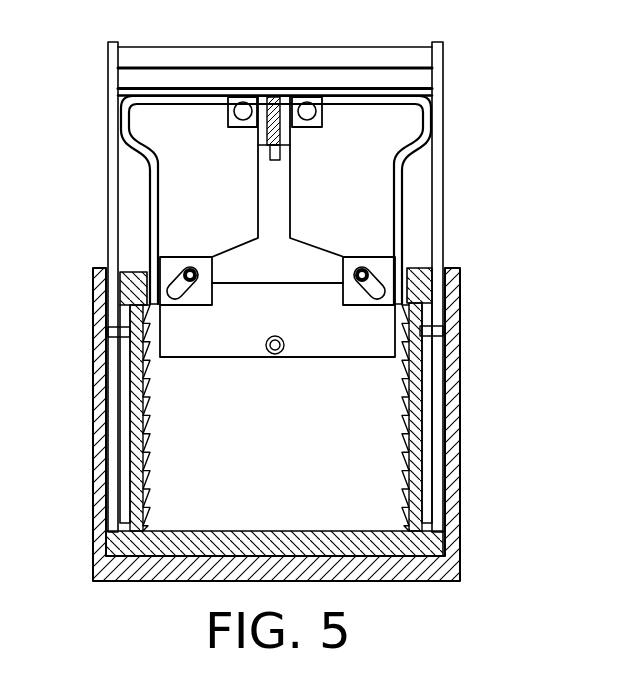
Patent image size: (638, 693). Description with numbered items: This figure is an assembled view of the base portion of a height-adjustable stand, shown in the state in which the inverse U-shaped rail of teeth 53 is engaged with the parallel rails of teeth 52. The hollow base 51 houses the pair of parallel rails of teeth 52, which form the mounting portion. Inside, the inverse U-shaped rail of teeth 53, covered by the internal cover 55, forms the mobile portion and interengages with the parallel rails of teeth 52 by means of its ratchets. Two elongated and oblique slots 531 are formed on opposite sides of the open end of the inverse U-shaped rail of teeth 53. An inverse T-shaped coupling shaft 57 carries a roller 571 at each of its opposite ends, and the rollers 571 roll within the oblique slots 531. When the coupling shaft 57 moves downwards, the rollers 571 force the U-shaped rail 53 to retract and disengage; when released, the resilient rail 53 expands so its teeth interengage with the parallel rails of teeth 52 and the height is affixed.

The hollow base 51 is at (452, 417).
The parallel rails of teeth 52 is at (425, 475).
The inverse U-shaped rail of teeth 53 is at (157, 182).
The internal cover 55 is at (440, 142).
The inverse T-shaped coupling shaft 57 is at (303, 253).
The roller 571 is at (363, 272).
The elongated and oblique slot 531 is at (383, 282).